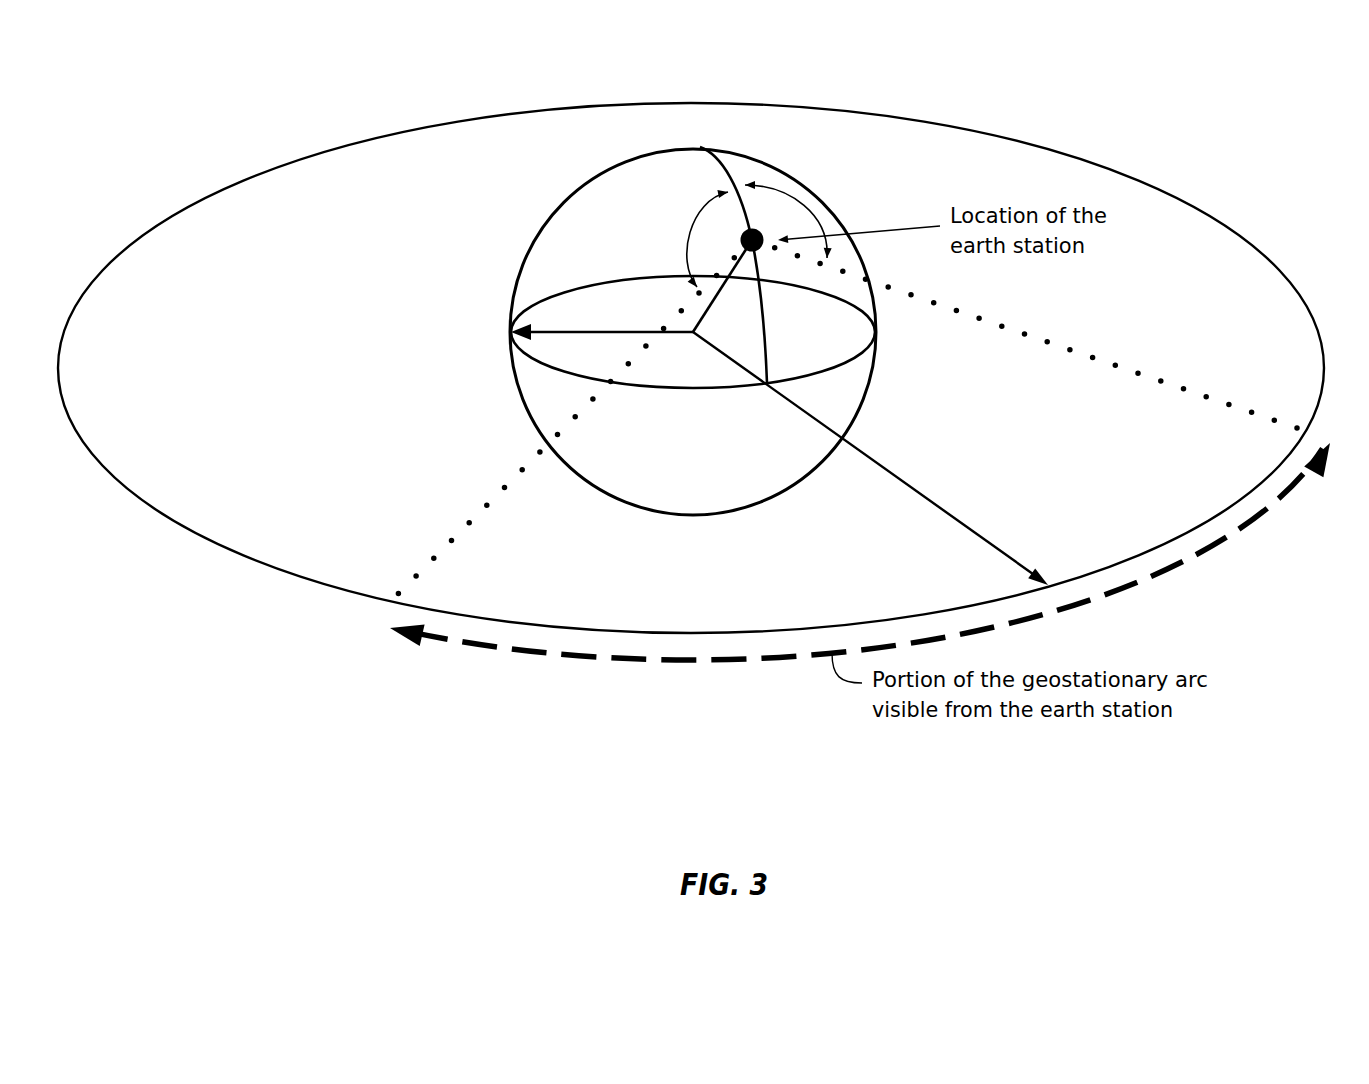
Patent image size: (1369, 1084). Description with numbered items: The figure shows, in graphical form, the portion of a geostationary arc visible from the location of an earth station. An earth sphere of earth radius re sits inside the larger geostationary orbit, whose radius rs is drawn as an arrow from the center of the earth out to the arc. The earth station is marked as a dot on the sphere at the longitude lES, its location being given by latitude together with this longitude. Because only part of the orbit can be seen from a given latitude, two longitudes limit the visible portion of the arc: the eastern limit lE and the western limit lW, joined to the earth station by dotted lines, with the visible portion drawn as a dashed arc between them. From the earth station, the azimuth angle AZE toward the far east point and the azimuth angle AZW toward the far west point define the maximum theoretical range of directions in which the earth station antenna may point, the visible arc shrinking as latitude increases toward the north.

The earth radius re is at (579, 312).
The geostationary orbit radius rs is at (870, 458).
The western limiting longitude lW is at (547, 426).
The eastern limiting longitude lE is at (1068, 346).
The earth station longitude lES is at (1060, 531).
The western azimuth angle AZW is at (676, 238).
The eastern azimuth angle AZE is at (805, 206).